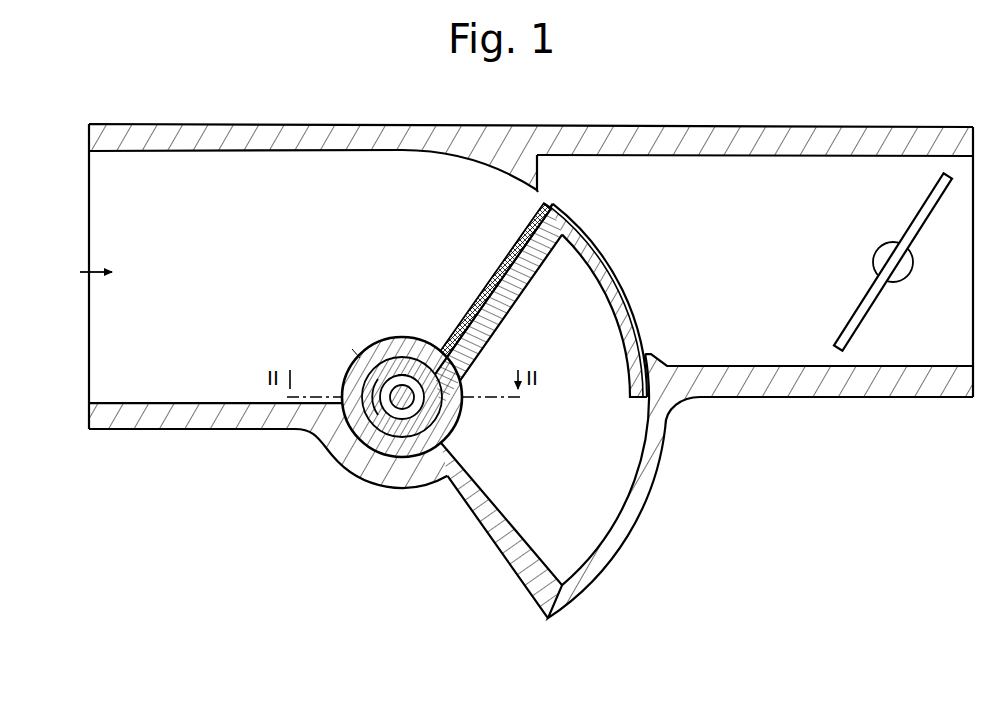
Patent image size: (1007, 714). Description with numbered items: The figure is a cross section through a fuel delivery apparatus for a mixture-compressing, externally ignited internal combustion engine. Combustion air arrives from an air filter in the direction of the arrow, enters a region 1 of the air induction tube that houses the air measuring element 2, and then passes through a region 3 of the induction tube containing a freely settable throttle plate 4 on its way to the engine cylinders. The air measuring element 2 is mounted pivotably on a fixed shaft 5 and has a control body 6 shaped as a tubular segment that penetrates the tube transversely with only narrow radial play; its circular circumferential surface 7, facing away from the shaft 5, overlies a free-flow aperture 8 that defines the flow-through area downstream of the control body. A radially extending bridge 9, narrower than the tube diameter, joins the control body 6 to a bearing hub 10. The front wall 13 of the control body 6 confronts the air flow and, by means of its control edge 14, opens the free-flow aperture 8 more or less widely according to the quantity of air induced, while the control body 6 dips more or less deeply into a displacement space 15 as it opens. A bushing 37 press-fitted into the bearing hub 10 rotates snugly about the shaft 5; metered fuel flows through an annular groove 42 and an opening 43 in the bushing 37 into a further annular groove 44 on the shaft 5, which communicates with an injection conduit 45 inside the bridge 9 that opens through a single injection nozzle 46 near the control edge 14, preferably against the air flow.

The region of the air induction tube 1 is at (238, 172).
The air measuring element 2 is at (548, 291).
The region of the induction tube 3 is at (732, 178).
The throttle plate 4 is at (919, 221).
The shaft 5 is at (418, 399).
The control body 6 is at (633, 347).
The circular circumferential surface 7 is at (634, 307).
The free-flow aperture 8 is at (618, 271).
The bridge 9 is at (498, 300).
The bearing hub 10 is at (379, 346).
The front wall 13 is at (528, 221).
The control edge 14 is at (538, 196).
The displacement space 15 is at (612, 490).
The bushing 37 is at (421, 420).
The annular groove 42 is at (356, 390).
The opening 43 is at (358, 356).
The annular groove 44 is at (405, 377).
The injection conduit 45 is at (517, 270).
The injection nozzle 46 is at (541, 212).